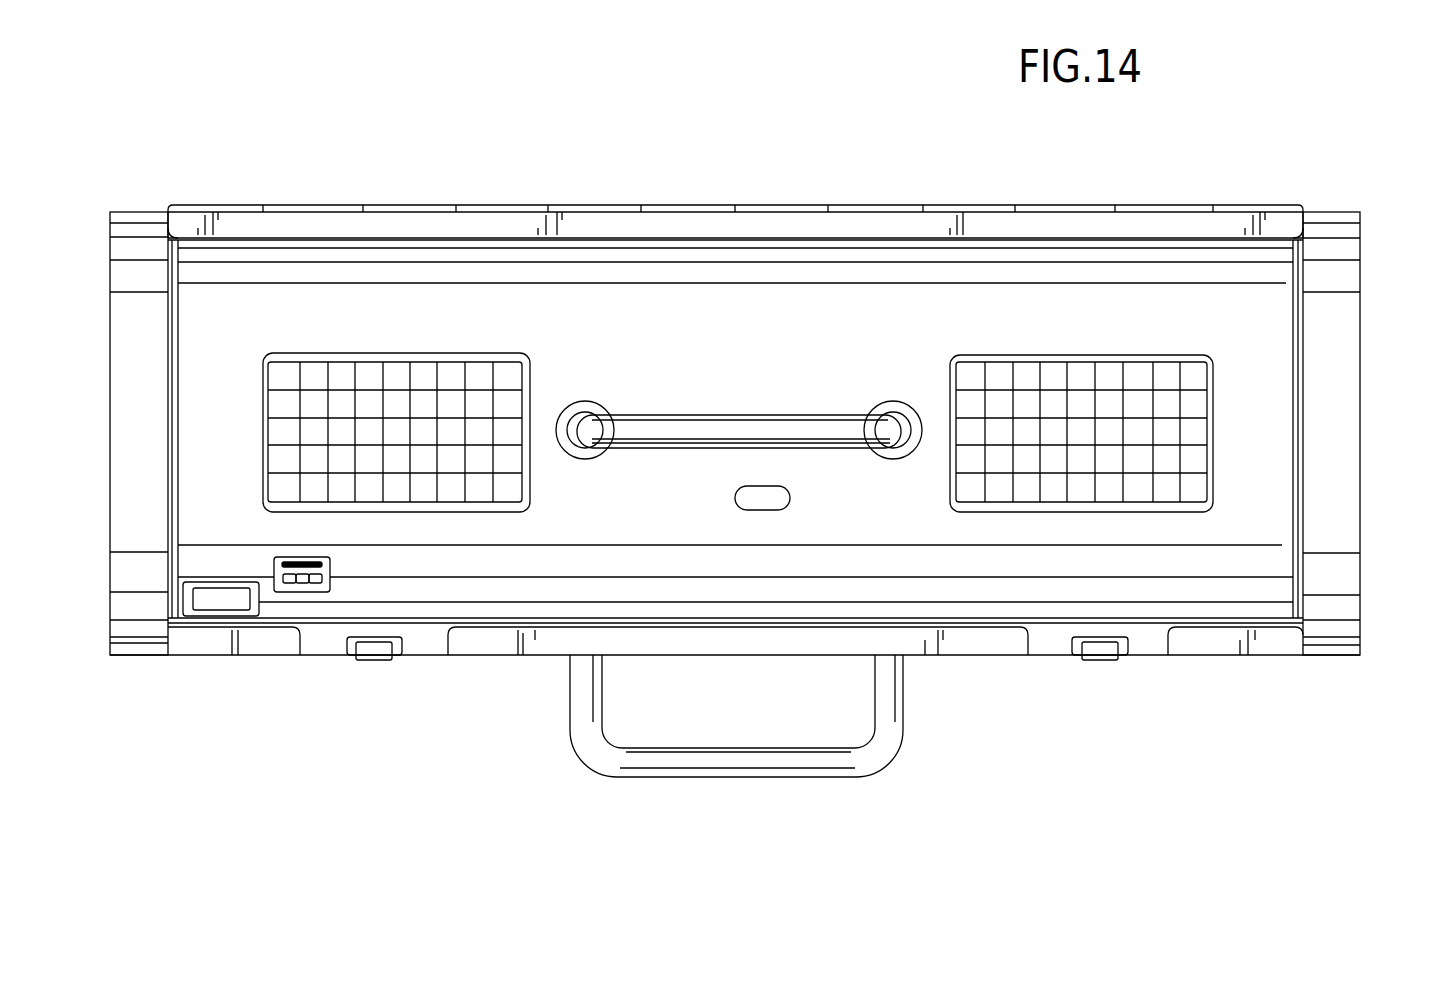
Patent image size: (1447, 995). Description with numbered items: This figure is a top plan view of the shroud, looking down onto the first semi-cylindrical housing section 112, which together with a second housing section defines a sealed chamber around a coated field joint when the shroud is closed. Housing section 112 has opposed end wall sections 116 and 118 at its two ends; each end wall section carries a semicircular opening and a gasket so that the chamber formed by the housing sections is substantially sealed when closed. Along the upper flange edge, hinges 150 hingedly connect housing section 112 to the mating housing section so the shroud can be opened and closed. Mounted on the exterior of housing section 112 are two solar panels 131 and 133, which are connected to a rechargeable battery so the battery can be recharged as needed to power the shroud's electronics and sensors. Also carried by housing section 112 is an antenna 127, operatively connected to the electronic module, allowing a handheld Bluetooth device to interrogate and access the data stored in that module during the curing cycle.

The housing section 112 is at (842, 340).
The end wall section 116 is at (1337, 354).
The end wall section 118 is at (118, 366).
The antenna 127 is at (768, 495).
The solar panel 131 is at (507, 378).
The solar panel 133 is at (998, 378).
The hinges 150 is at (322, 212).